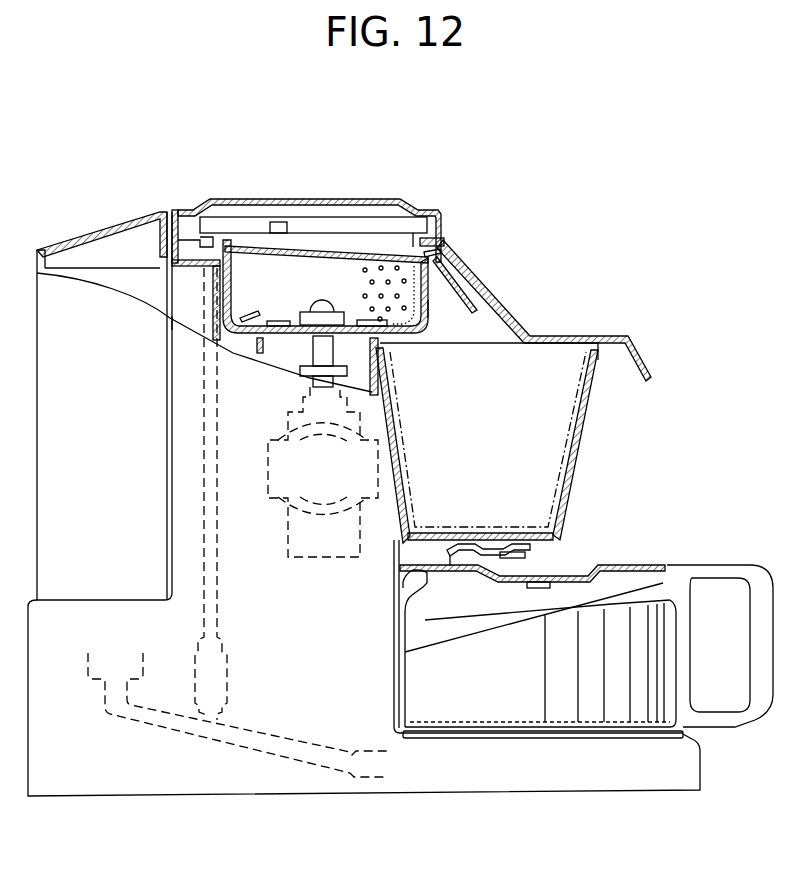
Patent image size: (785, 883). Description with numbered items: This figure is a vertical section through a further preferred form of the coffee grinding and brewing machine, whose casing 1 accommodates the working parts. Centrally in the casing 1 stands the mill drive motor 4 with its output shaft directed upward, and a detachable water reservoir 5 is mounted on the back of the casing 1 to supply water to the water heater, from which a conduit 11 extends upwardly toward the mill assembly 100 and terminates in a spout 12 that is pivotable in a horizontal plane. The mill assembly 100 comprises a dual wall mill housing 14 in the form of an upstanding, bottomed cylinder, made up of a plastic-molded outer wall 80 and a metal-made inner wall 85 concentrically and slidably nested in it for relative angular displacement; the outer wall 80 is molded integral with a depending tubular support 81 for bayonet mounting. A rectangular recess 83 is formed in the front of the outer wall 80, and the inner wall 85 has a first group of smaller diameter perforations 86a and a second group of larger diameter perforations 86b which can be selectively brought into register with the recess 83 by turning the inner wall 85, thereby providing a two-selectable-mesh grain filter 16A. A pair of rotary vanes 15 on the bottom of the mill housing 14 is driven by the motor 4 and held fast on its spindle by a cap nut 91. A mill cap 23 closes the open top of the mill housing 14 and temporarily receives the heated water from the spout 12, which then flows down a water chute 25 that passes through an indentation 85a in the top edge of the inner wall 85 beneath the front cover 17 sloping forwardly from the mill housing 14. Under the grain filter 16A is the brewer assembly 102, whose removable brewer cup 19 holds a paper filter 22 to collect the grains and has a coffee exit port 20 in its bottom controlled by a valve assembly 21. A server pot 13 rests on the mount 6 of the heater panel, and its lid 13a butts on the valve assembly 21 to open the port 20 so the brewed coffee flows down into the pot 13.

The casing 1 is at (356, 800).
The mill drive motor 4 is at (272, 478).
The water reservoir 5 is at (56, 297).
The mount 6 is at (680, 735).
The conduit 11 is at (203, 513).
The spout 12 is at (234, 226).
The server pot 13 is at (678, 648).
The lid 13a is at (653, 566).
The mill housing 14 is at (237, 356).
The rotary vanes 15 is at (267, 393).
The grain filter 16A is at (431, 306).
The front cover 17 is at (519, 324).
The brewer cup 19 is at (578, 447).
The coffee exit port 20 is at (512, 536).
The valve assembly 21 is at (535, 552).
The paper filter 22 is at (412, 469).
The mill cap 23 is at (333, 253).
The water chute 25 is at (465, 283).
The outer wall 80 is at (300, 350).
The tubular support 81 is at (259, 350).
The rectangular recess 83 is at (442, 246).
The inner wall 85 is at (226, 292).
The indentation 85a is at (446, 253).
The first group of smaller diameter perforations 86a is at (432, 320).
The second group of larger diameter perforations 86b is at (377, 265).
The cap nut 91 is at (325, 306).
The mill assembly 100 is at (210, 322).
The brewer assembly 102 is at (601, 397).